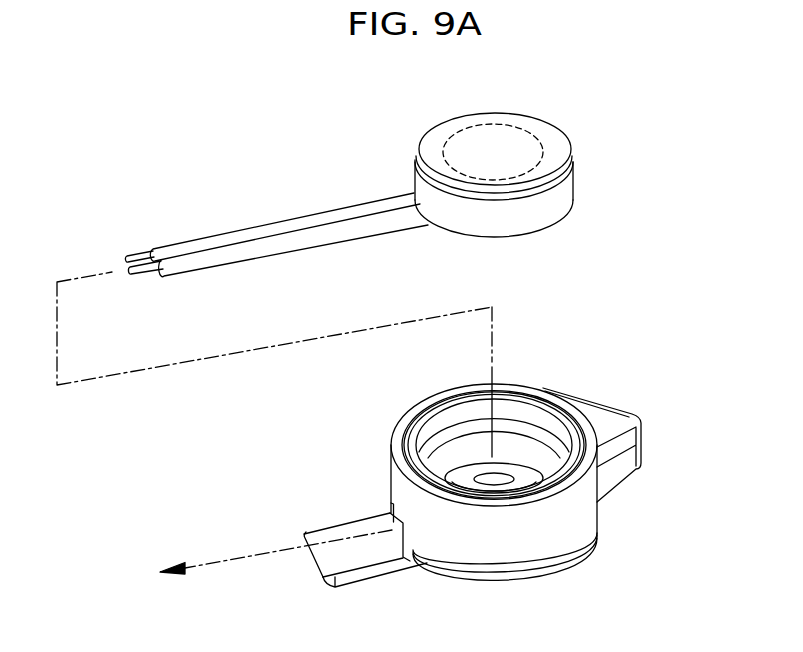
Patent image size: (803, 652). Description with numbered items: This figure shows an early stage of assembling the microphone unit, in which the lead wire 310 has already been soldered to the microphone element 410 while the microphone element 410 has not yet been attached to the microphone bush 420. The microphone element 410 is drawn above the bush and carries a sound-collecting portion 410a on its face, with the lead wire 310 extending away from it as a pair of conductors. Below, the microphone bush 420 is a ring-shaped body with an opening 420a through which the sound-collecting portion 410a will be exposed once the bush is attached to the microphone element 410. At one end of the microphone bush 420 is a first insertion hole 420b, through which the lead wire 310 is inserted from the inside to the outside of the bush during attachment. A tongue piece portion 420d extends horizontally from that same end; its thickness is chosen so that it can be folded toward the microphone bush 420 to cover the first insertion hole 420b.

The lead wire 310 is at (210, 238).
The microphone element 410 is at (544, 170).
The sound-collecting portion 410a is at (537, 135).
The microphone bush 420 is at (454, 459).
The opening 420a is at (498, 420).
The first insertion hole 420b is at (391, 513).
The tongue piece portion 420d is at (333, 556).